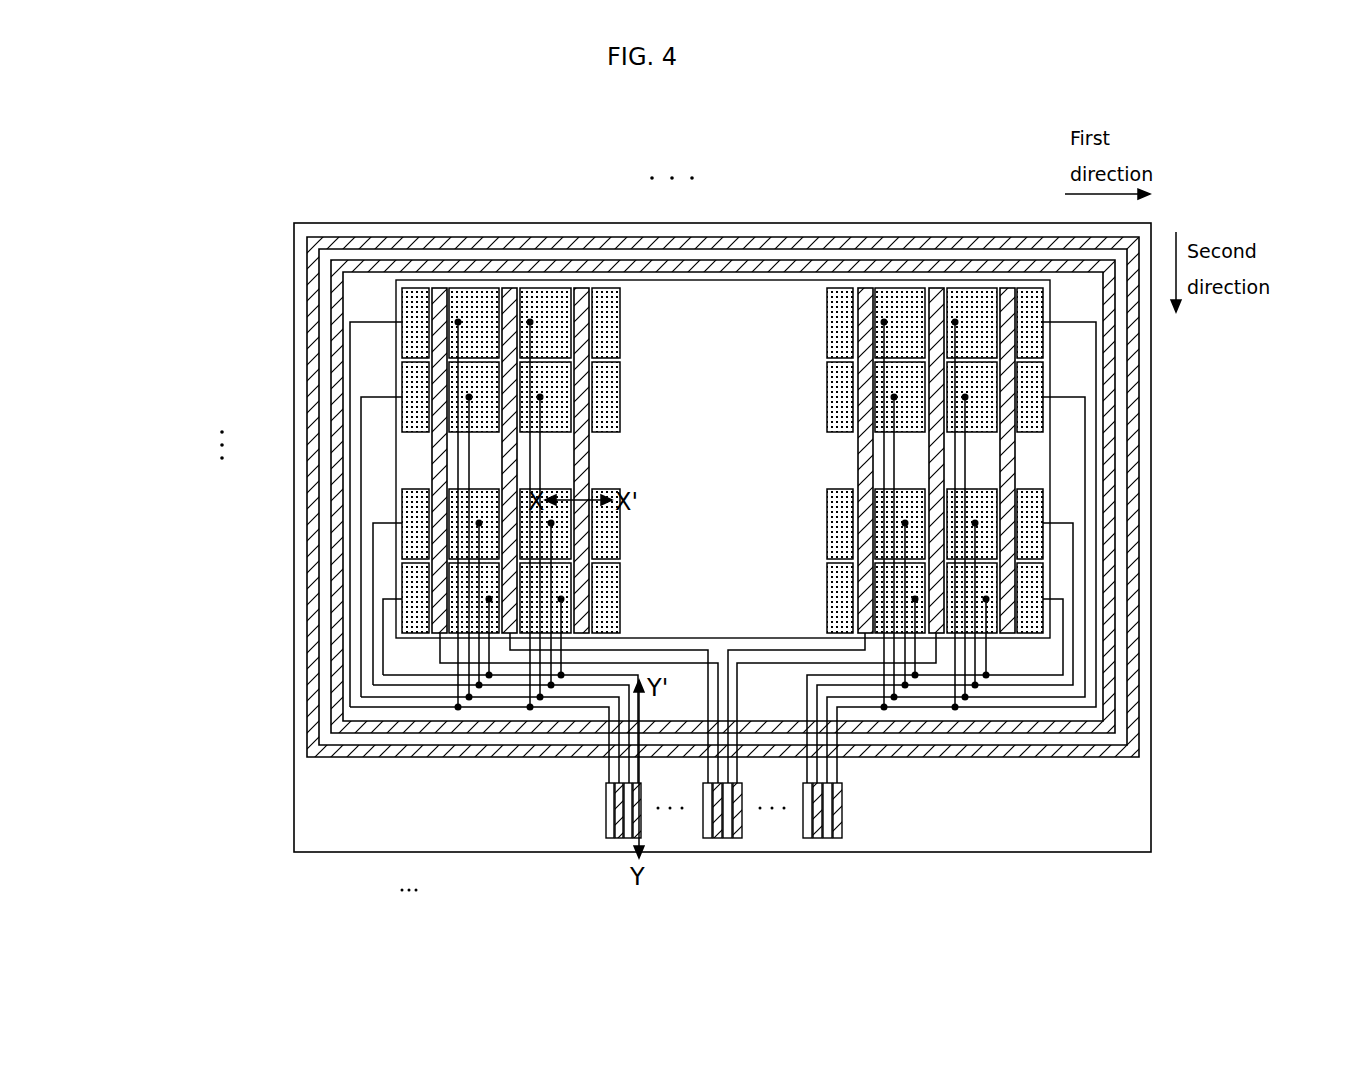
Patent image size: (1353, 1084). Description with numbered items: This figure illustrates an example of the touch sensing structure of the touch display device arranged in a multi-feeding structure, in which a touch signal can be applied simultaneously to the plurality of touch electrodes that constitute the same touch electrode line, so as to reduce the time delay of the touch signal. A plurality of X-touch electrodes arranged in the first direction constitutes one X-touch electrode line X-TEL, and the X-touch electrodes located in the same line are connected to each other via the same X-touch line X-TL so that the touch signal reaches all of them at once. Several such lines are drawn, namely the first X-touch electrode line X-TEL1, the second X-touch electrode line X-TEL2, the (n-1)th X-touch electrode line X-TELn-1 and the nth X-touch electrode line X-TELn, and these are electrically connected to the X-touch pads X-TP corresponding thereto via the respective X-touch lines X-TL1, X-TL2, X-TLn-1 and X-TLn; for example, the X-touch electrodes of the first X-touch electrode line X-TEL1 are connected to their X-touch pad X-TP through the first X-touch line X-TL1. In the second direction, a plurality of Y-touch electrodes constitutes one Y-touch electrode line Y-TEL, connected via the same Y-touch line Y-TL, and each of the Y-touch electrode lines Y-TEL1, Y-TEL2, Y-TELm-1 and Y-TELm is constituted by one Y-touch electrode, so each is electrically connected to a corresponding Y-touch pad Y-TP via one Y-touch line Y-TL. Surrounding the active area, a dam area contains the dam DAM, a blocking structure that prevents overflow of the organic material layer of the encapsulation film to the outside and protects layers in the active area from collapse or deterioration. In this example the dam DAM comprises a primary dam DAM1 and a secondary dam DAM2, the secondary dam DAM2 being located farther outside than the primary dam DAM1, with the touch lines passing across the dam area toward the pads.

The X-touch electrode line X-TEL is at (591, 534).
The first X-touch electrode line X-TEL1 is at (400, 298).
The second X-touch electrode line X-TEL2 is at (400, 381).
The (n-1)th X-touch electrode line X-TELn-1 is at (400, 506).
The nth X-touch electrode line X-TELn is at (626, 673).
The Y-touch electrode line Y-TEL is at (707, 367).
The first Y-touch electrode line Y-TEL1 is at (436, 284).
The second Y-touch electrode line Y-TEL2 is at (513, 284).
The (m-1)th Y-touch electrode line Y-TELm-1 is at (865, 284).
The mth Y-touch electrode line Y-TELm is at (940, 397).
The X-touch line X-TL is at (454, 821).
The first X-touch line X-TL1 is at (365, 710).
The second X-touch line X-TL2 is at (403, 700).
The (n-1)th X-touch line X-TLn-1 is at (508, 688).
The nth X-touch line X-TLn is at (600, 678).
The Y-touch line Y-TL is at (848, 668).
The X-touch pad X-TP is at (632, 840).
The Y-touch pad Y-TP is at (728, 838).
The dam DAM is at (812, 497).
The primary dam DAM1 is at (1108, 452).
The secondary dam DAM2 is at (1131, 493).